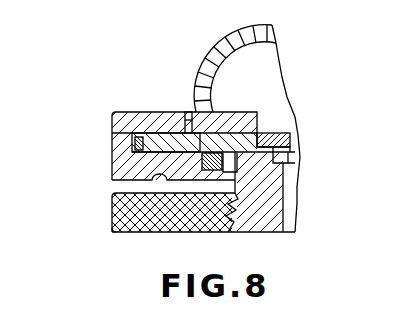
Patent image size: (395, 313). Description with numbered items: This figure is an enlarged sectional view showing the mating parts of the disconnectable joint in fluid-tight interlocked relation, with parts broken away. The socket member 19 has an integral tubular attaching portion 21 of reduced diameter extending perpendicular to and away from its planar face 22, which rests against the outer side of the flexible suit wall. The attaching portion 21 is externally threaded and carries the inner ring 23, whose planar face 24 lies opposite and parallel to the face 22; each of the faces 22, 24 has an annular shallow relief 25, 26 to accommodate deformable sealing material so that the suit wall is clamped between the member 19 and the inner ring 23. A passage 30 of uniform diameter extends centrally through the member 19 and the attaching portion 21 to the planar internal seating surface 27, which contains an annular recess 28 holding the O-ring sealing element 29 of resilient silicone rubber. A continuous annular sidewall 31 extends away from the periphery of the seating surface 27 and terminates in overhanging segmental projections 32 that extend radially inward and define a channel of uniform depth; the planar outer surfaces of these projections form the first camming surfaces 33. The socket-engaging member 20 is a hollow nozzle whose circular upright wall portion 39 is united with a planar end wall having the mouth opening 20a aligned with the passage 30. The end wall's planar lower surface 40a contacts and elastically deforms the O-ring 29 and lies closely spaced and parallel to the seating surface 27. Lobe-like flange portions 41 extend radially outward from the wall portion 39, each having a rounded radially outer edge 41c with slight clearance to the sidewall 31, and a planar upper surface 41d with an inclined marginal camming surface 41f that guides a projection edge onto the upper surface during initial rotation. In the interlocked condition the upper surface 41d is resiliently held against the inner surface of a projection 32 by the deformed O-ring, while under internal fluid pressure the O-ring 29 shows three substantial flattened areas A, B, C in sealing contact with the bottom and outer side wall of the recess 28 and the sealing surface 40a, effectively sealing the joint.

The socket member 19 is at (312, 185).
The socket-engaging member 20 is at (210, 43).
The mouth opening 20a is at (298, 120).
The attaching portion 21 is at (258, 232).
The planar face 22 is at (145, 210).
The inner ring 23 is at (112, 224).
The planar face 24 is at (190, 188).
The annular shallow relief 25 is at (155, 198).
The annular shallow relief 26 is at (167, 195).
The internal seating surface 27 is at (298, 143).
The annular recess 28 is at (251, 136).
The annular sealing element 29 is at (212, 118).
The passage 30 is at (290, 210).
The annular sidewall 31 is at (118, 143).
The overhanging segmental projections 32 is at (127, 117).
The first camming surfaces 33 is at (140, 186).
The upright wall portion 39 is at (188, 112).
The planar lower surface 40a is at (298, 163).
The flange portions 41 is at (113, 213).
The rounded radially outer edge 41c is at (115, 163).
The planar upper surface 41d is at (152, 128).
The camming surface 41f is at (130, 132).
The flattened area A is at (212, 237).
The flattened area B is at (212, 237).
The flattened area C is at (187, 122).